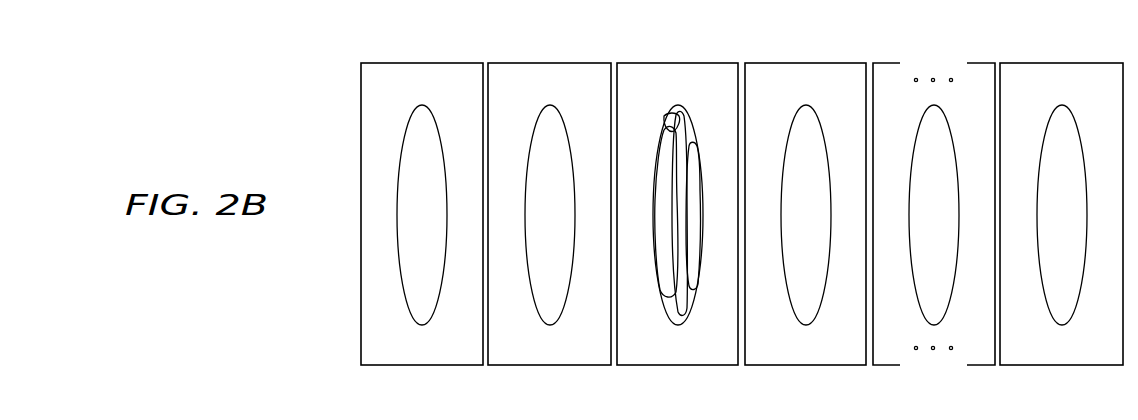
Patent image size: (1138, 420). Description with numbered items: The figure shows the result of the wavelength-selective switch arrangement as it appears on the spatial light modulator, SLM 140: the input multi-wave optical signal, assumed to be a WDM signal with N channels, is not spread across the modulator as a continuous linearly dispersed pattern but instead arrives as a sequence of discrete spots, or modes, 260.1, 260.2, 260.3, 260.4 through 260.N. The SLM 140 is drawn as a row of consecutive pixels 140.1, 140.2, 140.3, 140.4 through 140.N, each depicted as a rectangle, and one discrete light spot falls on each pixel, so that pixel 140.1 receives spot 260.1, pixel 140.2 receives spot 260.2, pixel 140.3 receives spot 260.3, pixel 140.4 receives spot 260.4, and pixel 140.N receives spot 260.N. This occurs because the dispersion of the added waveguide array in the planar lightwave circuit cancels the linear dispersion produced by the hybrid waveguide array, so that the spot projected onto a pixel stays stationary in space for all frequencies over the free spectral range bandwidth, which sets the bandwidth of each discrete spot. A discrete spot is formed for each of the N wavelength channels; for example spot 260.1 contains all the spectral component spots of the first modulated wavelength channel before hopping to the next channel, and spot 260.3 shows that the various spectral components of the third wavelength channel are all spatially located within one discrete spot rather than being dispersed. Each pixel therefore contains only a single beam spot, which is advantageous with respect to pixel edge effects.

The SLM 140 is at (326, 90).
The pixel of SLM 140.1 is at (422, 214).
The pixel of SLM 140.2 is at (549, 214).
The pixel of SLM 140.3 is at (677, 214).
The pixel of SLM 140.4 is at (805, 214).
The pixel of SLM 140.N is at (1061, 214).
The discrete light spot 260.1 is at (427, 109).
The discrete light spot 260.2 is at (555, 109).
The discrete light spot 260.3 is at (683, 109).
The discrete light spot 260.4 is at (811, 109).
The discrete light spot 260.N is at (1084, 92).